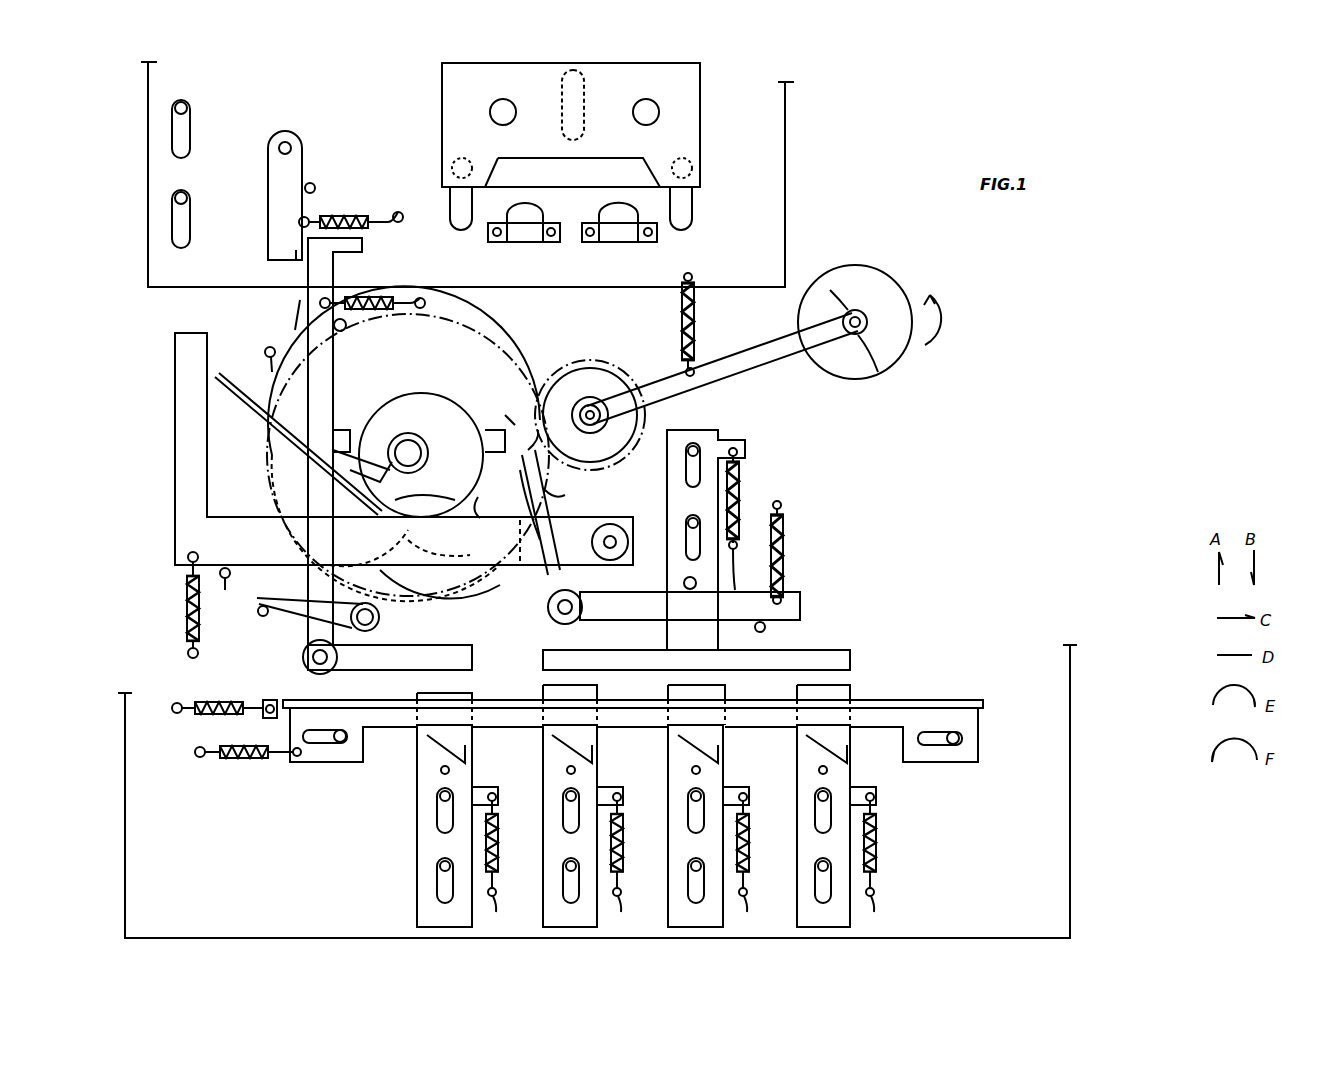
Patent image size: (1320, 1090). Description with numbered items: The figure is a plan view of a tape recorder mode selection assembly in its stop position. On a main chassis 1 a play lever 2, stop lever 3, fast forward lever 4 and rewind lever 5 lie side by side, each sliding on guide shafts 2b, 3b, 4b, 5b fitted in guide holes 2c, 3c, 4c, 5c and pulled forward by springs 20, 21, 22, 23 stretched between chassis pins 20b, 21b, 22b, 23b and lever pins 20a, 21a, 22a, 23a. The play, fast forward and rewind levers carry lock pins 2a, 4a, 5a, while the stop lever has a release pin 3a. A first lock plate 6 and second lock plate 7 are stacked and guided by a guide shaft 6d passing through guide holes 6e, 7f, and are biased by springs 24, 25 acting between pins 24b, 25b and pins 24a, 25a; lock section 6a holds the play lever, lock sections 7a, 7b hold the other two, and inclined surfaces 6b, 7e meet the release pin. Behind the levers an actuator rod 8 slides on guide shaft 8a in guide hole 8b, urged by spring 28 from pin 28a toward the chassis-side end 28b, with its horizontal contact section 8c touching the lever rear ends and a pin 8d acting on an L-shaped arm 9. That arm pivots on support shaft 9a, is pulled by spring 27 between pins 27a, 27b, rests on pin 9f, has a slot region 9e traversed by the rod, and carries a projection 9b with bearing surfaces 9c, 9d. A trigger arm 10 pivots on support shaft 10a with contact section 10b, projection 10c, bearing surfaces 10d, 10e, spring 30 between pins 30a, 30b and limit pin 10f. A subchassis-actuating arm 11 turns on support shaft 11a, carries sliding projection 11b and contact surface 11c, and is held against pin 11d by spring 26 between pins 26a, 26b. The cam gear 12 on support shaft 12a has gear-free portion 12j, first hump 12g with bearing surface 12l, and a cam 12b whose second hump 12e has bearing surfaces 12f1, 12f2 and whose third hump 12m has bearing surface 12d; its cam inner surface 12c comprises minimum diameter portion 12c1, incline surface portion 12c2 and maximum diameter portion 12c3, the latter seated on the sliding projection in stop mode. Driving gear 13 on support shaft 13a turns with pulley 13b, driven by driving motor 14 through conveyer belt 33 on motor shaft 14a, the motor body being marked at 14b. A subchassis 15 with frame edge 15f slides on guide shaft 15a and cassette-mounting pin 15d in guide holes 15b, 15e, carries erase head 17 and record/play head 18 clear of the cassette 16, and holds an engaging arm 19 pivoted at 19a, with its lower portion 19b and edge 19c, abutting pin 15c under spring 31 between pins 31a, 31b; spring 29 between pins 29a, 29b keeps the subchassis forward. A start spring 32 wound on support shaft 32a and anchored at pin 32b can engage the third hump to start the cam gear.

The main chassis 1 is at (1070, 700).
The play lever 2 is at (440, 928).
The lock pin 2a is at (441, 770).
The guide shaft 2b is at (437, 862).
The guide hole 2c is at (440, 873).
The stop lever 3 is at (557, 928).
The release pin 3a is at (567, 770).
The guide shaft 3b is at (563, 862).
The guide hole 3c is at (565, 880).
The fast forward lever 4 is at (683, 928).
The lock pin 4a is at (692, 770).
The guide shaft 4b is at (690, 862).
The guide hole 4c is at (690, 880).
The rewind lever 5 is at (810, 928).
The lock pin 5a is at (819, 770).
The guide shaft 5b is at (817, 862).
The guide hole 5c is at (817, 880).
The first lock plate 6 is at (335, 762).
The lock section 6a is at (430, 742).
The inclined surface 6b is at (553, 742).
The guide shaft 6d is at (356, 745).
The guide hole 6e is at (631, 806).
The second lock plate 7 is at (280, 700).
The lock section 7a is at (682, 742).
The lock section 7b is at (810, 742).
The inclined surface 7e is at (568, 753).
The guide hole 7f is at (945, 745).
The actuator rod 8 is at (850, 660).
The guide shaft 8a is at (686, 522).
The guide hole 8b is at (690, 545).
The horizontal contact section 8c is at (545, 660).
The pin 8d is at (684, 580).
The arm 9 is at (805, 604).
The support shaft 9a is at (548, 607).
The projection 9b is at (555, 512).
The bearing surface 9c is at (523, 436).
The bearing surface 9d is at (519, 505).
The slot 9e is at (688, 590).
The pin 9f is at (761, 636).
The trigger arm 10 is at (460, 652).
The support shaft 10a is at (310, 657).
The horizontal contact section 10b is at (450, 672).
The projection 10c is at (345, 458).
The bearing surface 10d is at (287, 323).
The bearing surface 10e is at (342, 252).
The pin 10f is at (345, 330).
The subchassis-actuating arm 11 is at (175, 447).
The support shaft 11a is at (612, 525).
The sliding projection 11b is at (460, 506).
The contact surface 11c is at (180, 336).
The pin 11d is at (225, 593).
The cam gear 12 is at (508, 378).
The support shaft 12a is at (428, 468).
The cam 12b is at (445, 395).
The cam inner surface 12c is at (425, 415).
The minimum diameter portion 12c1 is at (425, 505).
The incline surface portion 12c2 is at (369, 548).
The maximum diameter portion 12c3 is at (410, 580).
The bearing surface 12d is at (378, 478).
The second hump 12e is at (486, 430).
The bearing surface 12f1 is at (480, 450).
The bearing surface 12f2 is at (495, 465).
The first hump 12g is at (454, 547).
The gear-free portion 12j is at (495, 402).
The bearing surface 12l is at (530, 542).
The third hump 12m is at (345, 505).
The driving gear 13 is at (580, 372).
The support shaft 13a is at (606, 414).
The pulley 13b is at (620, 388).
The driving motor 14 is at (877, 290).
The motor shaft 14a is at (880, 372).
The wheel arm 14b is at (850, 310).
The subchassis 15 is at (785, 128).
The guide shaft 15a is at (175, 196).
The guide hole 15b is at (185, 228).
The pin 15c is at (315, 186).
The cassette-mounting pin 15d is at (692, 168).
The guide hole 15e is at (692, 219).
The frame edge 15f is at (200, 288).
The cassette 16 is at (677, 75).
The erase head 17 is at (533, 242).
The record/play head 18 is at (620, 242).
The engaging arm 19 is at (275, 183).
The pivot 19a is at (282, 150).
The notch 19b is at (296, 256).
The edge 19c is at (300, 262).
The spring 20 is at (498, 852).
The pin 20a is at (490, 793).
The pin 20b is at (500, 911).
The spring 21 is at (623, 852).
The pin 21a is at (614, 793).
The pin 21b is at (620, 911).
The spring 22 is at (749, 852).
The pin 22a is at (741, 793).
The pin 22b is at (748, 911).
The spring 23 is at (876, 852).
The pin 23a is at (868, 793).
The pin 23b is at (882, 911).
The spring 24 is at (240, 758).
The pin 24a is at (296, 760).
The pin 24b is at (195, 752).
The spring 25 is at (200, 705).
The pin 25a is at (272, 715).
The pin 25b is at (175, 712).
The spring 26 is at (190, 612).
The pin 26a is at (190, 557).
The pin 26b is at (188, 653).
The spring 27 is at (782, 560).
The pin 27a is at (780, 605).
The pin 27b is at (780, 504).
The spring 28 is at (742, 482).
The pin 28a is at (738, 452).
The spring end 28b is at (743, 565).
The spring 29 is at (680, 318).
The pin 29a is at (692, 280).
The pin 29b is at (695, 372).
The spring 30 is at (382, 300).
The pin 30a is at (328, 310).
The pin 30b is at (425, 306).
The spring 31 is at (355, 215).
The pin 31a is at (299, 222).
The pin 31b is at (403, 220).
The start spring 32 is at (225, 375).
The support shaft 32a is at (380, 617).
The pin 32b is at (258, 614).
The conveyer belt 33 is at (765, 385).